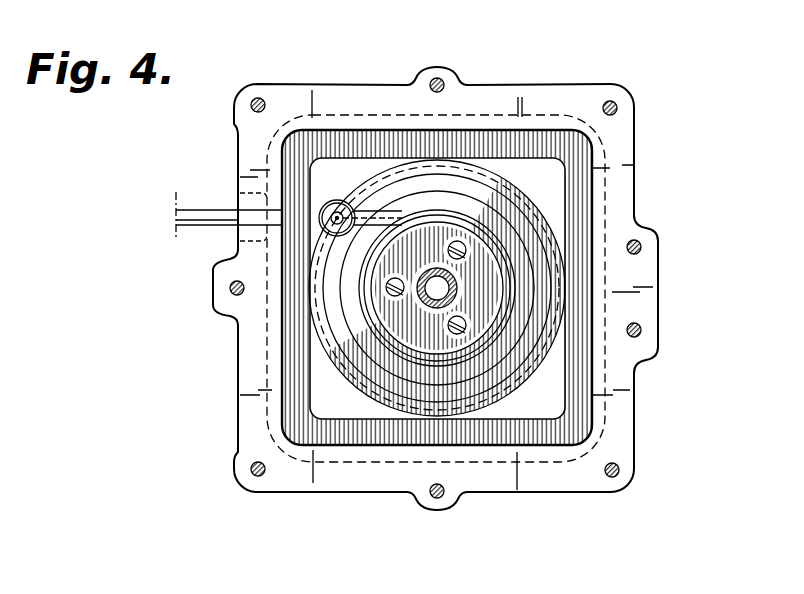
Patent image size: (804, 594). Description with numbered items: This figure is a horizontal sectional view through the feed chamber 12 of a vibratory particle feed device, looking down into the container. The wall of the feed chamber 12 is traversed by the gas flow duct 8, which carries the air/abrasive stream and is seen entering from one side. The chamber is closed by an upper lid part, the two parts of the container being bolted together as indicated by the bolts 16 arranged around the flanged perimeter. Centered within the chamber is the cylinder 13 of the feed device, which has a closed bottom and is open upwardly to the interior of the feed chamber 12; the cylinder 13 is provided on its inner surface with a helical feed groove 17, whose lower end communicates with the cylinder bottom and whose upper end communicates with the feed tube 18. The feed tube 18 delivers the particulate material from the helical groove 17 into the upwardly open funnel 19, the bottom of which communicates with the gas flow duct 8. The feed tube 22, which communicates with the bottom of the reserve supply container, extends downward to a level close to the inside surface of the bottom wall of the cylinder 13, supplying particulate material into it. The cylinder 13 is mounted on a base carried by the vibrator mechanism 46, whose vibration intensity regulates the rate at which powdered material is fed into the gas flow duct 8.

The gas flow duct 8 is at (203, 216).
The feed chamber 12 is at (242, 352).
The cylinder 13 is at (472, 217).
The bolts 16 is at (641, 242).
The helical feed groove 17 is at (505, 293).
The feed tube 18 is at (364, 211).
The funnel 19 is at (330, 200).
The feed tube 22 is at (430, 307).
The vibrator mechanism 46 is at (332, 357).